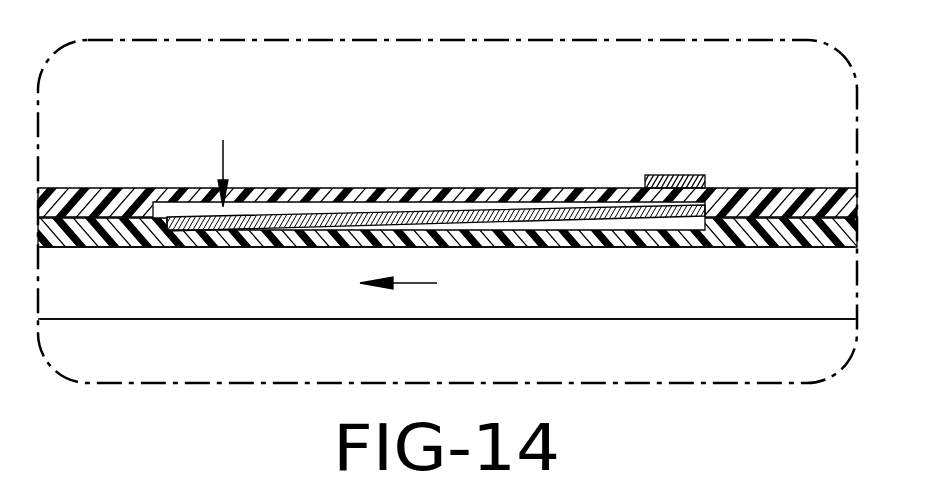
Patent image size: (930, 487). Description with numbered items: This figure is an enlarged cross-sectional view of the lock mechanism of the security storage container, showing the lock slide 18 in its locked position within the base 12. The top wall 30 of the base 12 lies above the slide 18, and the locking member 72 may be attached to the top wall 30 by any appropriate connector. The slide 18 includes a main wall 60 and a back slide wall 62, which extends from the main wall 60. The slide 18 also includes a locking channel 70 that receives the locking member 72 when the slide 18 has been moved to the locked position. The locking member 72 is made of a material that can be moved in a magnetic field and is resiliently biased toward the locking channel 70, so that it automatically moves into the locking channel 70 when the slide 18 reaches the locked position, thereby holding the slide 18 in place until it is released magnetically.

The base 12 is at (150, 190).
The lock slide 18 is at (197, 248).
The top wall 30 is at (790, 197).
The main wall 60 is at (133, 242).
The back slide wall 62 is at (518, 300).
The locking channel 70 is at (574, 228).
The locking member 72 is at (290, 220).